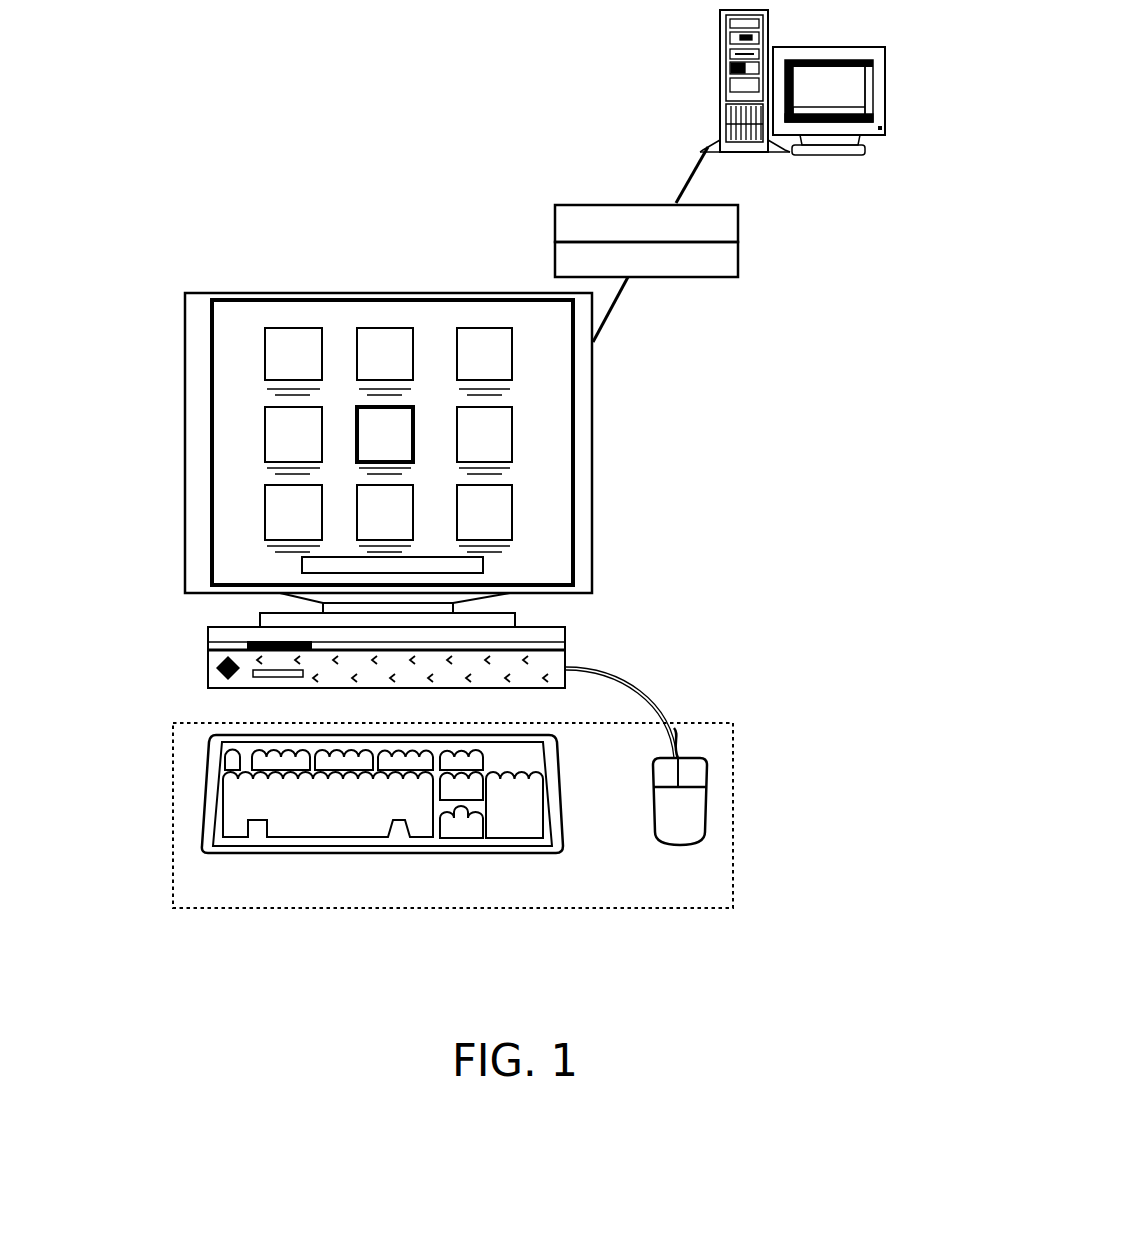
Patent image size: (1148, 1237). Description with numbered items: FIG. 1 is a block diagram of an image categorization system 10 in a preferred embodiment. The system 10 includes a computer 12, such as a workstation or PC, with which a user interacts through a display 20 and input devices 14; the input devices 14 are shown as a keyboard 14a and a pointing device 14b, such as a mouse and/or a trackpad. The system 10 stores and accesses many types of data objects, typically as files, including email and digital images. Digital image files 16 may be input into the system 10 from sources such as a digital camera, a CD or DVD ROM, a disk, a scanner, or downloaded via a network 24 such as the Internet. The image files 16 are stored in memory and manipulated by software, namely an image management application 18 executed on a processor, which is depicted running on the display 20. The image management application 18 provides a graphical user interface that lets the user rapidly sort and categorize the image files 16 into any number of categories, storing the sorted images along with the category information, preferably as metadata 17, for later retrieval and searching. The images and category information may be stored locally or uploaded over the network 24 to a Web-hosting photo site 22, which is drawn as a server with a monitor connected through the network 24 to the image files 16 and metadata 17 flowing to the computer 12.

The image categorization system 10 is at (300, 88).
The computer 12 is at (444, 679).
The input devices 14 is at (492, 794).
The keyboard 14a is at (323, 819).
The pointing device 14b is at (732, 833).
The image files 16 is at (646, 223).
The metadata 17 is at (646, 259).
The image management application 18 is at (349, 460).
The display 20 is at (475, 437).
The Web-hosting photo site 22 is at (808, 94).
The network 24 is at (695, 168).